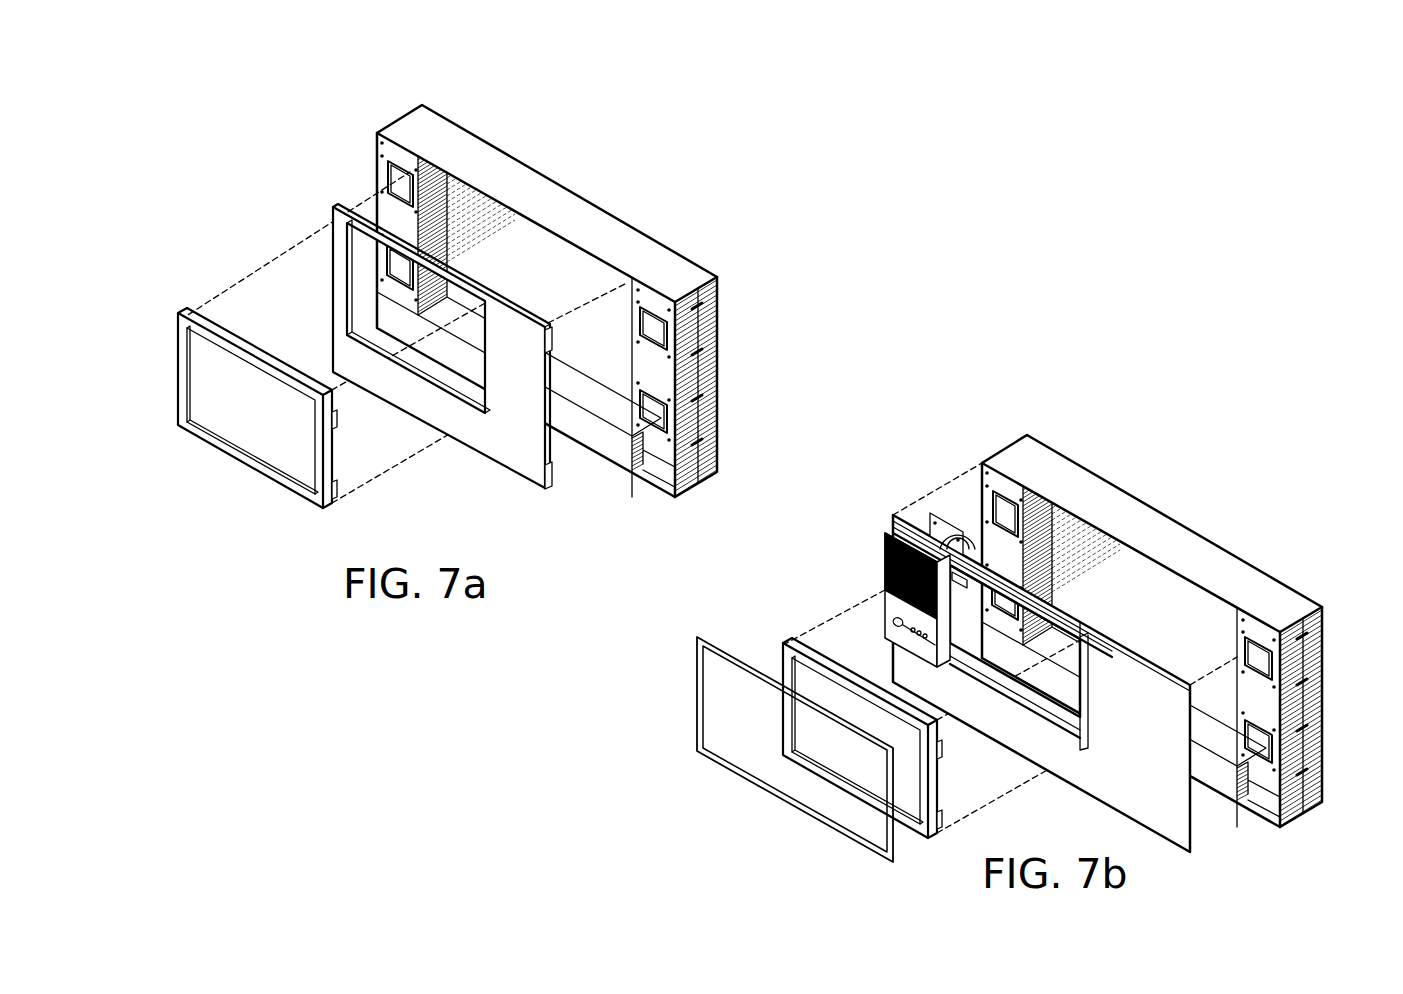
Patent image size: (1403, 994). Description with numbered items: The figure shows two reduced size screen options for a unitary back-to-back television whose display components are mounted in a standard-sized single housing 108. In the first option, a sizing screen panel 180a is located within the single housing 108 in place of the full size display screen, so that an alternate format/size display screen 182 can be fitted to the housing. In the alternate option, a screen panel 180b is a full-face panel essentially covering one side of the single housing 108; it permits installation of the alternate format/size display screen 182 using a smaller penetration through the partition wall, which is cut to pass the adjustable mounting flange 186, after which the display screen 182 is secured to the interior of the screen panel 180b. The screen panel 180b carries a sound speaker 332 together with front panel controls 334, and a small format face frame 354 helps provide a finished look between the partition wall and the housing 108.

In FIG. 7a, the single housing 108 is at (612, 228).
In FIG. 7b, the single housing 108 is at (1230, 567).
In FIG. 7a, the sizing screen panel 180a is at (334, 252).
In FIG. 7b, the screen panel 180b is at (1178, 823).
In FIG. 7a, the display screen 182 is at (237, 437).
In FIG. 7b, the display screen 182 is at (782, 657).
In FIG. 7b, the adjustable mounting flange 186 is at (1083, 688).
In FIG. 7b, the sound speaker 332 is at (942, 522).
In FIG. 7b, the electronics module 334 is at (885, 627).
In FIG. 7b, the small format face frame 354 is at (757, 778).